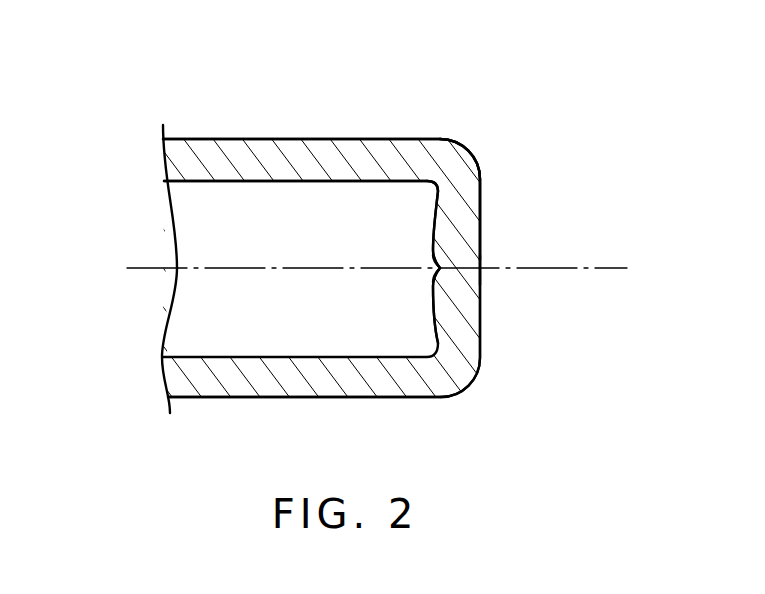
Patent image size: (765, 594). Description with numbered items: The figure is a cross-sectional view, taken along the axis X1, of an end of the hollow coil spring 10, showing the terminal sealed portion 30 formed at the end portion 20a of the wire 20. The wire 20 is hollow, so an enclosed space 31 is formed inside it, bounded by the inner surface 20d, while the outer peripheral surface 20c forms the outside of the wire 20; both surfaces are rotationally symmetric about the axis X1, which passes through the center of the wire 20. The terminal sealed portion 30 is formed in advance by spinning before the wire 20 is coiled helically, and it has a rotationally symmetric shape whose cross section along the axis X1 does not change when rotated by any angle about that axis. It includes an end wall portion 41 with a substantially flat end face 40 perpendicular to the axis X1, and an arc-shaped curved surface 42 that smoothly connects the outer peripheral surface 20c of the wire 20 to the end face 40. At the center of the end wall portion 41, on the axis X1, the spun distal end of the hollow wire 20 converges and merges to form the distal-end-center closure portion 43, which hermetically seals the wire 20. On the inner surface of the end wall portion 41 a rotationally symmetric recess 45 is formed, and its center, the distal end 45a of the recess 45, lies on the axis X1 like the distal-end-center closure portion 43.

The hollow coil spring 10 is at (358, 271).
The wire 20 is at (358, 270).
The end portion 20a is at (373, 390).
The outer peripheral surface 20c is at (378, 139).
The inner surface 20d is at (328, 182).
The terminal sealed portion 30 is at (480, 243).
The enclosed space 31 is at (190, 316).
The end face 40 is at (457, 245).
The end wall portion 41 is at (458, 228).
The arc-shaped curved surface 42 is at (474, 151).
The distal-end-center closure portion 43 is at (470, 268).
The recess 45 is at (432, 262).
The distal end of the recess 45a is at (432, 276).
The axis X1 is at (594, 268).